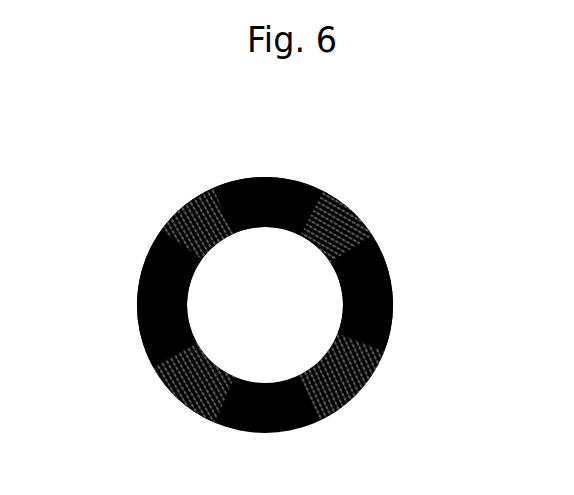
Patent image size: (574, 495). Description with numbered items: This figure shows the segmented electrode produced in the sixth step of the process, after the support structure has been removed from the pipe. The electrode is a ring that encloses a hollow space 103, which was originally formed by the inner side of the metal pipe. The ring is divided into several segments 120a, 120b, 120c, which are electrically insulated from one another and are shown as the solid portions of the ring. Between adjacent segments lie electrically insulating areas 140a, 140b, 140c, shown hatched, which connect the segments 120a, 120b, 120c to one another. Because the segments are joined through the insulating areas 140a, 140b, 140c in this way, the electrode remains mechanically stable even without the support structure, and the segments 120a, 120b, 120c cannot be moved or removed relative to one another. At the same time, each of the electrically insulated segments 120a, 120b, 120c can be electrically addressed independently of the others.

The hollow space 103 is at (318, 340).
The segment 120a is at (290, 178).
The segment 120b is at (140, 323).
The segment 120c is at (390, 320).
The electrically insulating area 140a is at (183, 220).
The electrically insulating area 140b is at (353, 215).
The electrically insulating area 140c is at (175, 393).